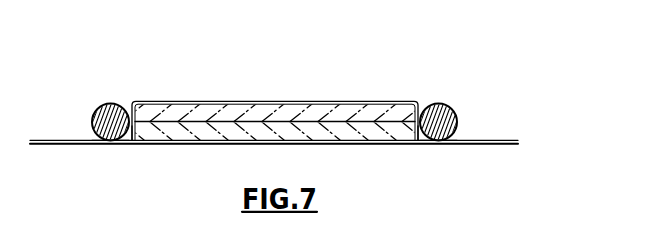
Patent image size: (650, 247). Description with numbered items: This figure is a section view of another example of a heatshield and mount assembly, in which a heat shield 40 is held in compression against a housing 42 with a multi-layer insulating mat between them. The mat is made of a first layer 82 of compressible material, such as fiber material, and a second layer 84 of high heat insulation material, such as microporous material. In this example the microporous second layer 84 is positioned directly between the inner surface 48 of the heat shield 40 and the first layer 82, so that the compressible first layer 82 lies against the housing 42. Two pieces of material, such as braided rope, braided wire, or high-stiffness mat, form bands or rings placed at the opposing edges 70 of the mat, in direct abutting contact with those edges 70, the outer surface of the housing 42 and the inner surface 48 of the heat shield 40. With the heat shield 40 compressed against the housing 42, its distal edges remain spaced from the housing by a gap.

The heat shield 40 is at (313, 101).
The housing 42 is at (503, 140).
The inner surface of the heat shield 48 is at (347, 104).
The edges of the mat 70 is at (135, 140).
The first layer 82 is at (268, 128).
The second layer 84 is at (272, 112).